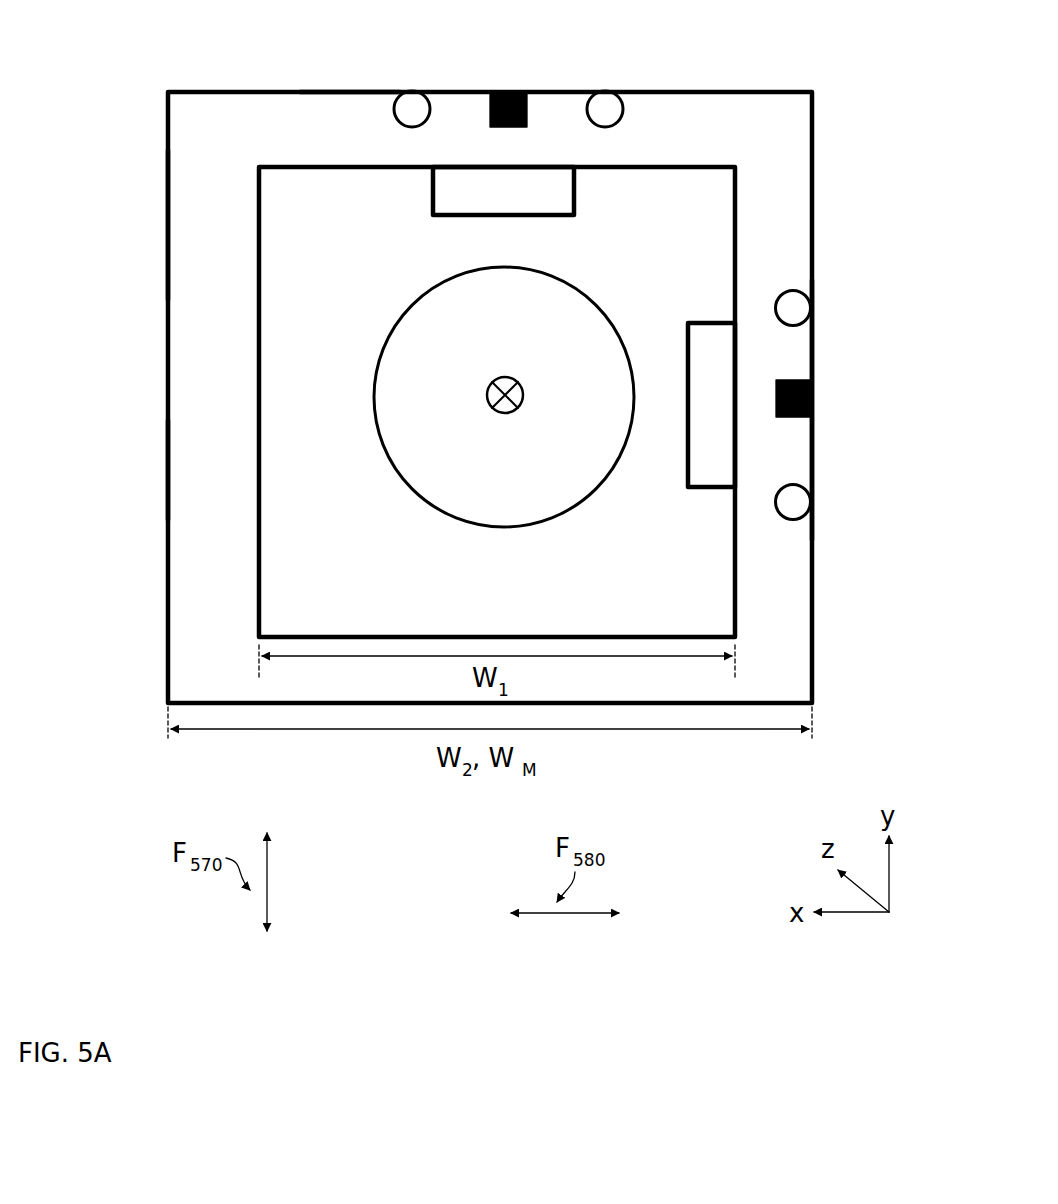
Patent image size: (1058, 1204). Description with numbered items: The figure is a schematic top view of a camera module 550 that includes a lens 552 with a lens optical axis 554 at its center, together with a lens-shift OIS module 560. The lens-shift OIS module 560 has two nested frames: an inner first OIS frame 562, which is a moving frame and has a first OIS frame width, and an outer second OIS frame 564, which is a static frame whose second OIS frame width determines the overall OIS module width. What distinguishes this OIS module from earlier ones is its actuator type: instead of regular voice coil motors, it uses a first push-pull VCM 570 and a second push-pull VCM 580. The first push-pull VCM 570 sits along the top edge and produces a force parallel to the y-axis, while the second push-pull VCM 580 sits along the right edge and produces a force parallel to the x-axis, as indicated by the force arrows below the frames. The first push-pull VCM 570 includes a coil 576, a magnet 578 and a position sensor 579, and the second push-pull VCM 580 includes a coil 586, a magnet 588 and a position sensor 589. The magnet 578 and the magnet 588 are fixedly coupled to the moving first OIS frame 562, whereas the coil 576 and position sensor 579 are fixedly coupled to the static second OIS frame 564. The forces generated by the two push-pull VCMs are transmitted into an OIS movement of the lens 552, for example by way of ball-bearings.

The camera module 550 is at (112, 47).
The lens 552 is at (556, 322).
The lens optical axis 554 is at (526, 407).
The lens-shift OIS module 560 is at (130, 281).
The first OIS frame 562 is at (256, 192).
The second OIS frame 564 is at (166, 231).
The first push-pull VCM 570 is at (360, 117).
The coil 576 is at (418, 88).
The magnet 578 is at (580, 190).
The position sensor 579 is at (511, 88).
The second push-pull VCM 580 is at (773, 278).
The coil 586 is at (814, 305).
The magnet 588 is at (742, 361).
The position sensor 589 is at (816, 403).